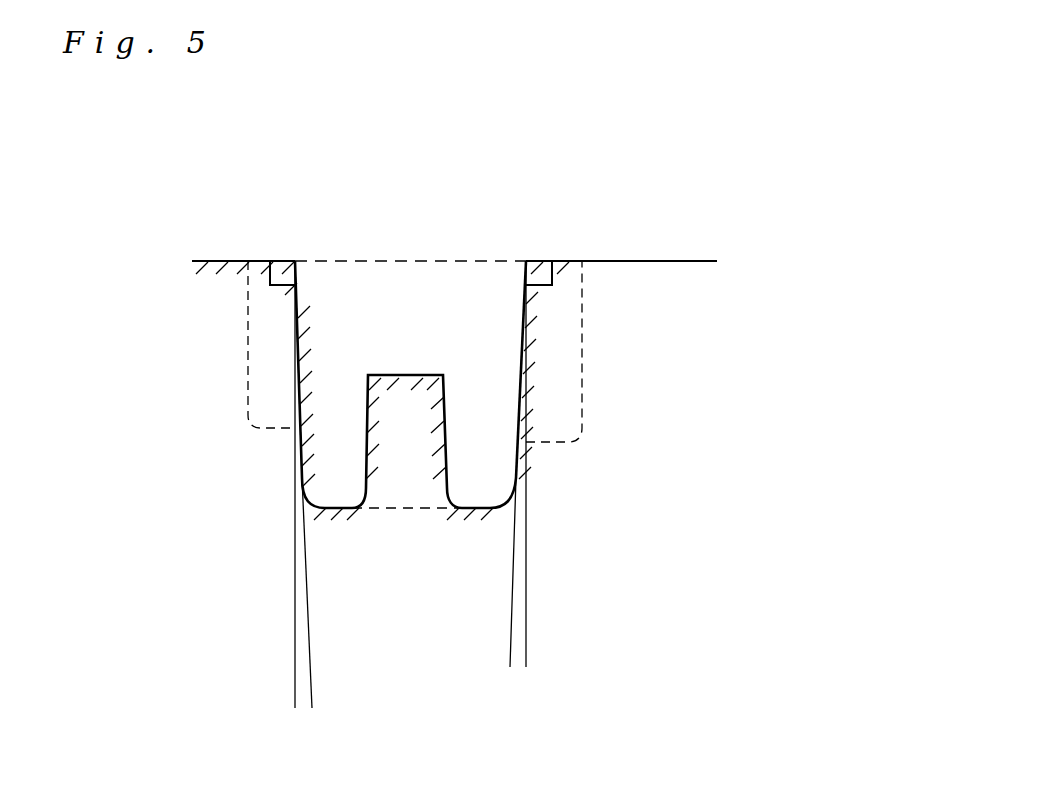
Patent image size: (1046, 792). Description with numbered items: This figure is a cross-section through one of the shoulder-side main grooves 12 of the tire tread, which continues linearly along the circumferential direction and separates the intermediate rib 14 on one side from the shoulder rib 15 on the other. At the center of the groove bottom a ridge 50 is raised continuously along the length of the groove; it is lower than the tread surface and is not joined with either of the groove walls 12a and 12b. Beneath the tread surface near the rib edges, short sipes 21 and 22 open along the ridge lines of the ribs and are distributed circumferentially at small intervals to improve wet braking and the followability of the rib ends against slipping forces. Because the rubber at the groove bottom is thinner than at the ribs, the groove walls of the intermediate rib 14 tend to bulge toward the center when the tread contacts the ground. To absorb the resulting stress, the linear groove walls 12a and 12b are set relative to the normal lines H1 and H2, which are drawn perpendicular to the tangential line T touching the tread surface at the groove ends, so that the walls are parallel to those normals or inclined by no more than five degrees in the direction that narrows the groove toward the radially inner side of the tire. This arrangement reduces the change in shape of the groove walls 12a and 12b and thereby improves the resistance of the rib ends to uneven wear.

The main groove 12 is at (447, 308).
The groove wall 12a is at (303, 323).
The groove wall 12b is at (515, 338).
The intermediate rib 14 is at (233, 303).
The shoulder rib 15 is at (642, 292).
The short sipe 21 is at (262, 373).
The short sipe 22 is at (543, 367).
The ridge 50 is at (410, 465).
The tangential line T is at (590, 257).
The normal line H1 is at (295, 597).
The normal line H2 is at (528, 556).